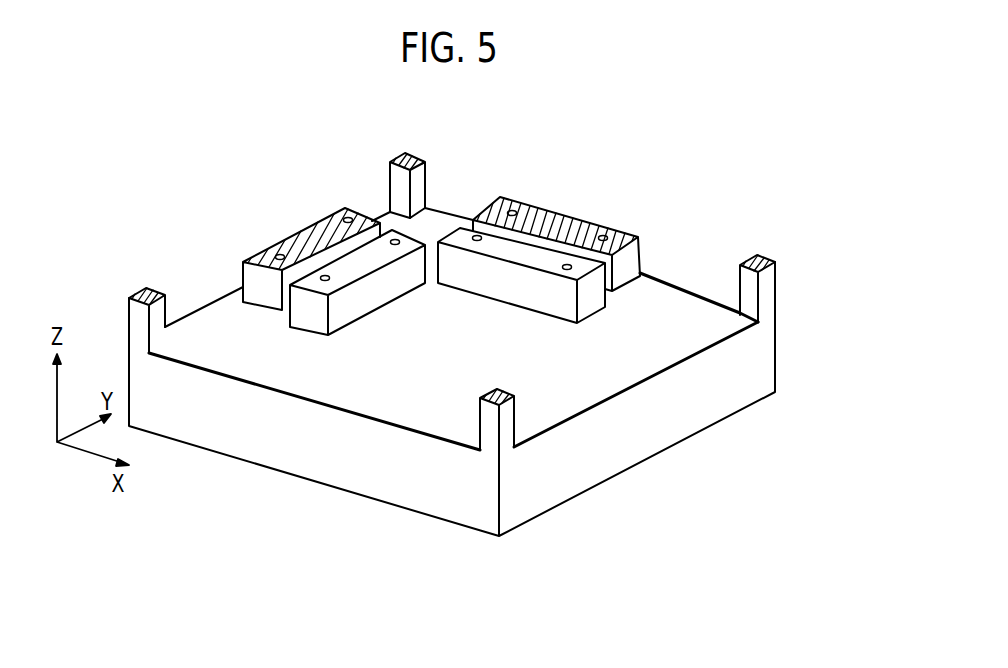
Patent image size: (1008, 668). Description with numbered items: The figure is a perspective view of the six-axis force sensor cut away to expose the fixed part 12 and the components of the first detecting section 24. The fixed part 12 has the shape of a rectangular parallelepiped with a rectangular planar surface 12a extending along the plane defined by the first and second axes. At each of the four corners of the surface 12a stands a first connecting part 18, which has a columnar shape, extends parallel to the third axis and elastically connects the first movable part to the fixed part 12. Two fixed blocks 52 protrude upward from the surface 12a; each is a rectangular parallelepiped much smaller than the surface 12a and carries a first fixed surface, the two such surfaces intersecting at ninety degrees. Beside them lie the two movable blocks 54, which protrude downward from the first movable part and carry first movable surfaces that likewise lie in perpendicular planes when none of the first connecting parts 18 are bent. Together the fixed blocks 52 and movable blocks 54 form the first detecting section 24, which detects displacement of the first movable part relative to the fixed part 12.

The fixed part 12 is at (355, 470).
The rectangular planar surface 12a is at (560, 397).
The first connecting part 18 is at (782, 293).
The first detecting section 24 is at (536, 185).
The fixed block 52 is at (306, 322).
The movable block 54 is at (307, 228).